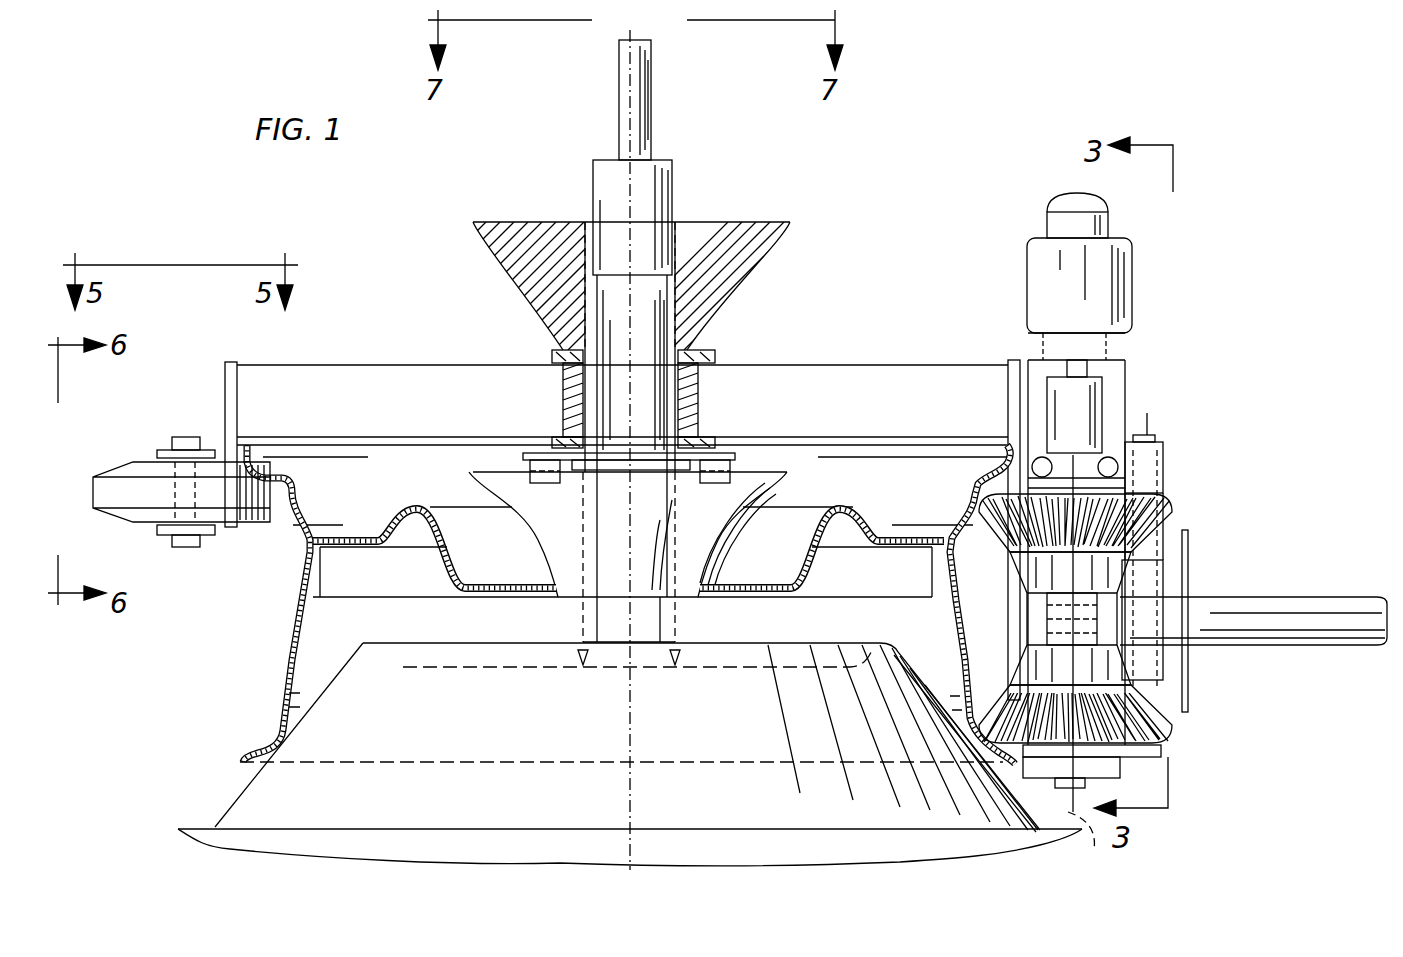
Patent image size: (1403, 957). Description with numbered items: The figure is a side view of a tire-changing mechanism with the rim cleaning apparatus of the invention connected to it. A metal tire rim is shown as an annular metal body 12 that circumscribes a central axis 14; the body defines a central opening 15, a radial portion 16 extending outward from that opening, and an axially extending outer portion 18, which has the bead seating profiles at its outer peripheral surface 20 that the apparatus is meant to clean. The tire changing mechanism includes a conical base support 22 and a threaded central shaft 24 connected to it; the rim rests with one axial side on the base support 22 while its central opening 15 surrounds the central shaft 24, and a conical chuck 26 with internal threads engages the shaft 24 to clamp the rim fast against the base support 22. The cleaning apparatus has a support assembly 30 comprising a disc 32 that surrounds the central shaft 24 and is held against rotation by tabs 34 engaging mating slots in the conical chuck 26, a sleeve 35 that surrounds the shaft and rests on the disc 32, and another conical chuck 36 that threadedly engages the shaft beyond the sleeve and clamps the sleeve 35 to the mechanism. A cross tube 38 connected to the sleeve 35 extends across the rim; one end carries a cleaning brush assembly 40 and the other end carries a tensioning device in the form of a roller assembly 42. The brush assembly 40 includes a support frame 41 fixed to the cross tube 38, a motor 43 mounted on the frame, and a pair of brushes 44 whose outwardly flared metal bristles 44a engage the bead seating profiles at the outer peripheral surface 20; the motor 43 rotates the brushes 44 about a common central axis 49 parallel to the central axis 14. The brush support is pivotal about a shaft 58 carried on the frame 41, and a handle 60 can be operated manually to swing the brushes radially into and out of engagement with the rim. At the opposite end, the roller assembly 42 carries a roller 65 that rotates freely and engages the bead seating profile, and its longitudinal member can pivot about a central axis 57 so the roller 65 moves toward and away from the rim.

The annular metal body 12 is at (280, 608).
The central axis 14 is at (628, 722).
The central opening 15 is at (710, 574).
The radial portion 16 is at (433, 500).
The axially extending outer portion 18 is at (268, 690).
The outer peripheral surface 20 is at (283, 648).
The conical base support 22 is at (352, 680).
The threaded central shaft 24 is at (592, 625).
The conical chuck 26 is at (782, 490).
The support assembly 30 is at (888, 305).
The disc 32 is at (540, 470).
The tabs 34 is at (718, 472).
The sleeve 35 is at (696, 396).
The conical chuck 36 is at (722, 272).
The cross tube 38 is at (950, 385).
The cleaning brush assembly 40 is at (1185, 463).
The support frame 41 is at (1105, 408).
The roller assembly 42 is at (140, 432).
The motor 43 is at (1120, 288).
The brushes 44 is at (1178, 500).
The metal bristles 44a is at (1172, 513).
The common central axis 49 is at (1076, 845).
The central axis 57 is at (1143, 772).
The shaft 58 is at (1148, 434).
The handle 60 is at (1290, 602).
The roller 65 is at (110, 492).